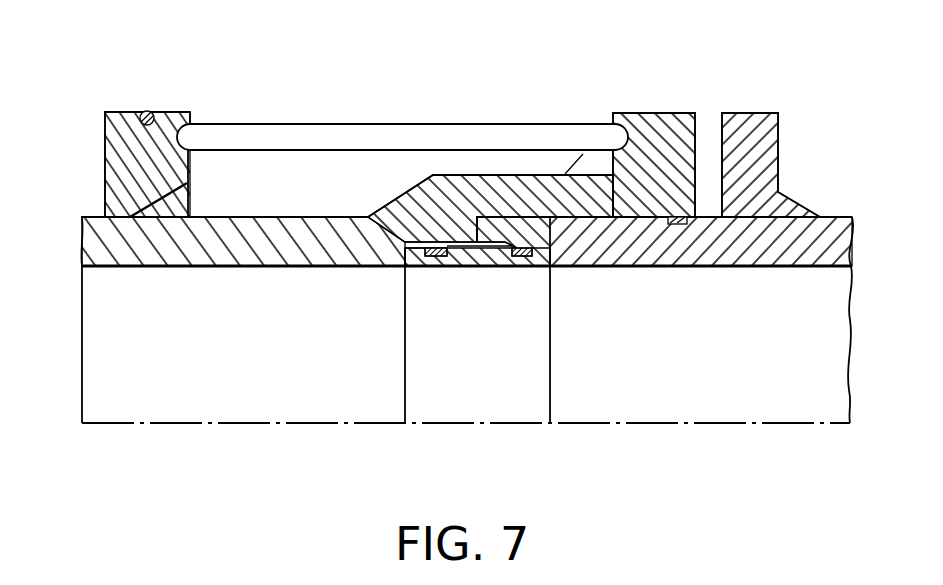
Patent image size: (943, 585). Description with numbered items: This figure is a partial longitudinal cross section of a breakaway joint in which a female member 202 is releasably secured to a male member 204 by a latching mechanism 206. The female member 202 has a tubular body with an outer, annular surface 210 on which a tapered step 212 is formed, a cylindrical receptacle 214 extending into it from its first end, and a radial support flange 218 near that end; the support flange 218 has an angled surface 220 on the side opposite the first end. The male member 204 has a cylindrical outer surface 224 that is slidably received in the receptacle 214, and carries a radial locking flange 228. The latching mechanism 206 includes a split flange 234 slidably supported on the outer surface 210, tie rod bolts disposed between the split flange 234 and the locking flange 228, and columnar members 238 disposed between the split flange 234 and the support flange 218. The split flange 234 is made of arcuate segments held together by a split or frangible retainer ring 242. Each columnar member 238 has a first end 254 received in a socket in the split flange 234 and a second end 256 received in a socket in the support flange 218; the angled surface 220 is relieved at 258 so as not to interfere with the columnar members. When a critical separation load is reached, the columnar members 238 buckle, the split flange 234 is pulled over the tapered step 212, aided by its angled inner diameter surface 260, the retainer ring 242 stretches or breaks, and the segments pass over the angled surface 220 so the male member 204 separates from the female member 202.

The female member 202 is at (92, 211).
The male member 204 is at (839, 213).
The latching mechanism 206 is at (459, 85).
The outer surface 210 is at (200, 215).
The tapered step 212 is at (407, 193).
The cylindrical receptacle 214 is at (668, 222).
The radial support flange 218 is at (662, 112).
The angled surface 220 is at (584, 172).
The cylindrical outer surface 224 is at (566, 211).
The radial locking flange 228 is at (752, 112).
The split flange 234 is at (123, 110).
The columnar member 238 is at (345, 123).
The retainer ring 242 is at (152, 112).
The first end 254 is at (215, 123).
The second end 256 is at (578, 123).
The relief 258 is at (585, 170).
The angled inner diameter surface 260 is at (160, 207).